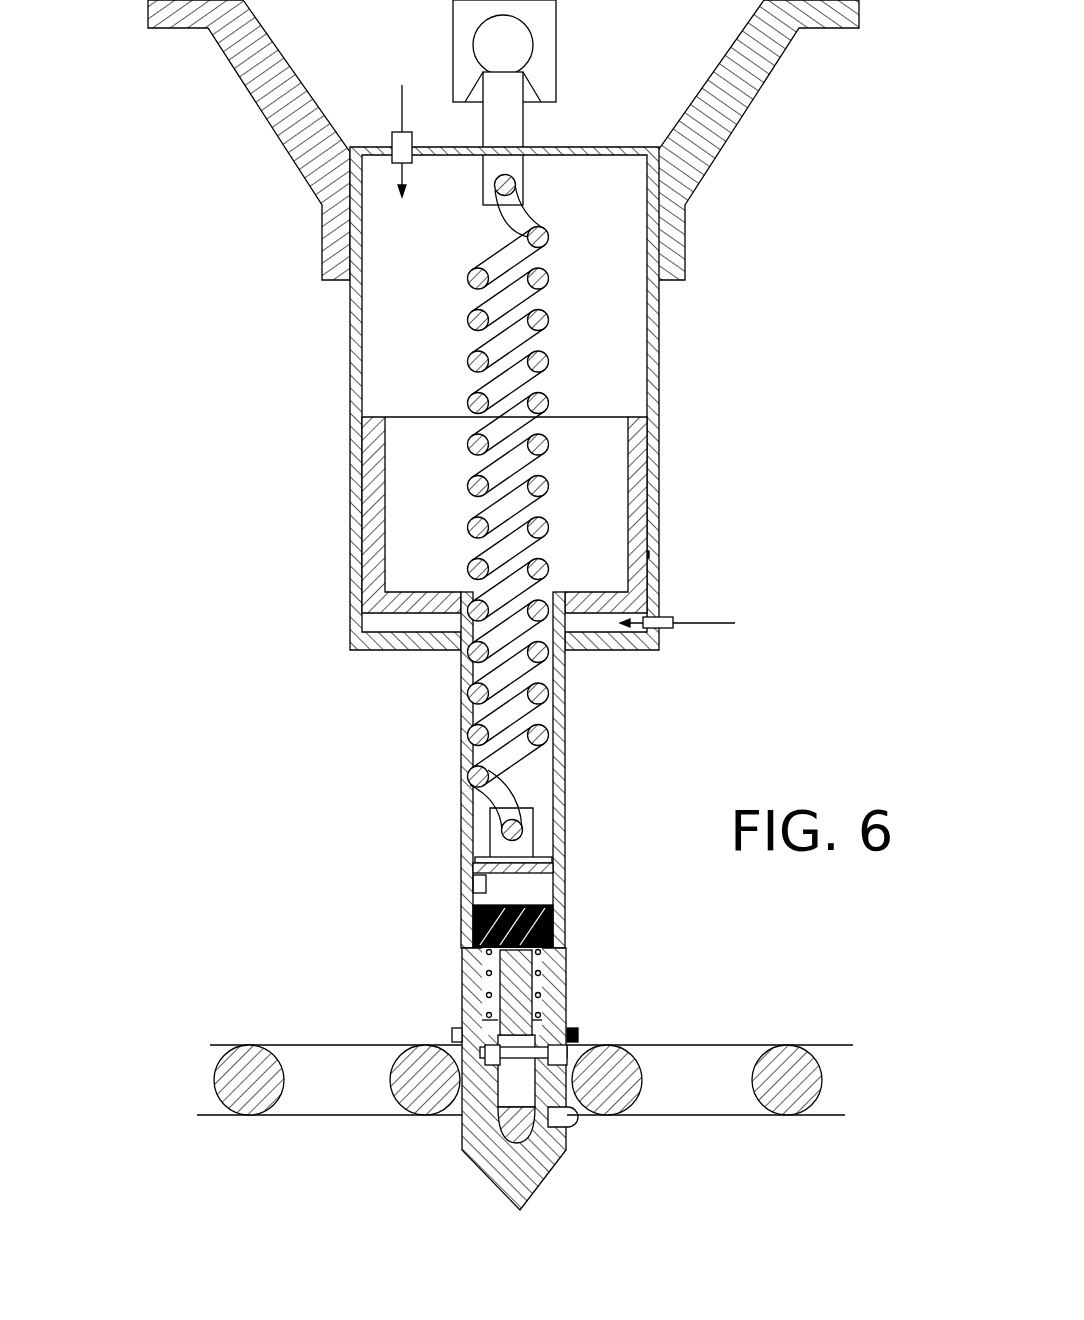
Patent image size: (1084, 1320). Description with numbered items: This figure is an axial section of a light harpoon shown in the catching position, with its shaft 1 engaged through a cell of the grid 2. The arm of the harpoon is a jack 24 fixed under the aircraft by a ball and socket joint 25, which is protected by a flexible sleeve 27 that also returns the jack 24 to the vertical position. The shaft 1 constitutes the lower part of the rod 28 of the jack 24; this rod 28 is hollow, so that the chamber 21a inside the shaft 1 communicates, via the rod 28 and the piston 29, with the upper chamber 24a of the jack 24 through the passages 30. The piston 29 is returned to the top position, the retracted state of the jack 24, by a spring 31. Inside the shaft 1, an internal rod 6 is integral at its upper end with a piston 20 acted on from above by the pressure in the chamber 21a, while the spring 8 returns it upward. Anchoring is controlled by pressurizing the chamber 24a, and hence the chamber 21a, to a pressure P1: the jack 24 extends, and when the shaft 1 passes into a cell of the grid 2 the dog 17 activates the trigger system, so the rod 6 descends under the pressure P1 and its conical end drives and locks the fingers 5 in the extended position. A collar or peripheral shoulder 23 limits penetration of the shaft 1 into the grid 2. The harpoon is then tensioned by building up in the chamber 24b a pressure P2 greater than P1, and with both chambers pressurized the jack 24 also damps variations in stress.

The cylindrical shaft 1 is at (465, 957).
The grid 2 is at (275, 1043).
The fingers 5 is at (578, 1117).
The internal rod 6 is at (553, 975).
The spring 8 is at (465, 1000).
The dog 17 is at (575, 1048).
The piston 20 is at (465, 930).
The chamber 21a is at (535, 893).
The collar or peripheral shoulder 23 is at (575, 1032).
The jack 24 is at (352, 447).
The upper chamber of the jack 24a is at (620, 370).
The lower chamber of the jack 24b is at (408, 622).
The ball and socket joint 25 is at (556, 72).
The flexible sleeve 27 is at (290, 136).
The rod of the jack 28 is at (565, 790).
The piston of the jack 29 is at (596, 592).
The passages 30 is at (458, 892).
The spring 31 is at (470, 330).
The pressure P1 is at (387, 141).
The pressure P2 is at (677, 606).